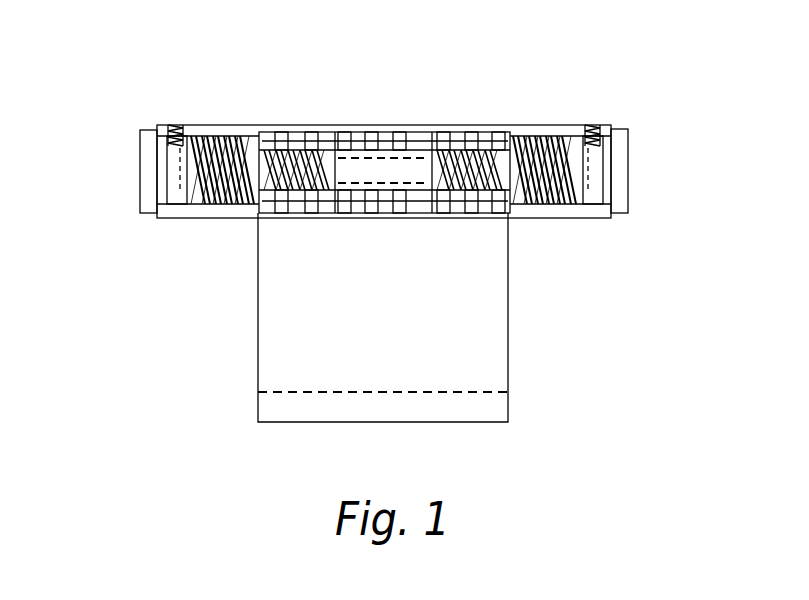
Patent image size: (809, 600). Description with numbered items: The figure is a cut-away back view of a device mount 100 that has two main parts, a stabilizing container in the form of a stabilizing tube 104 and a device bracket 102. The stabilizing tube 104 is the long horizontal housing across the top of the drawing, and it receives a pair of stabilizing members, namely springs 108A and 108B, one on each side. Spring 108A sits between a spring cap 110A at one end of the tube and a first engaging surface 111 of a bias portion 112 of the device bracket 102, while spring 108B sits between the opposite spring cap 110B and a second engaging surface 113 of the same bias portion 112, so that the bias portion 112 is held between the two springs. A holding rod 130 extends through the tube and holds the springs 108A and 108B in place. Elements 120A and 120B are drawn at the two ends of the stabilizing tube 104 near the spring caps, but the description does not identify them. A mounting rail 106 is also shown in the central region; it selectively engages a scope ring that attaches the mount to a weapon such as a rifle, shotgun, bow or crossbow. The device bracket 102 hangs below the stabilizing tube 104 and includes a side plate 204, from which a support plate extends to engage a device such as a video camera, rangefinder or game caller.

The device mount 100 is at (710, 88).
The device bracket 102 is at (516, 355).
The stabilizing tube 104 is at (540, 122).
The mounting rail 106 is at (418, 142).
The spring 108A is at (230, 205).
The spring 108B is at (550, 205).
The spring cap 110A is at (148, 203).
The spring cap 110B is at (625, 195).
The first engaging surface 111 is at (335, 160).
The bias portion 112 is at (360, 138).
The second engaging surface 113 is at (433, 176).
The first fastener 120A is at (175, 126).
The second fastener 120B is at (595, 126).
The holding rod 130 is at (228, 170).
The side plate 204 is at (510, 327).